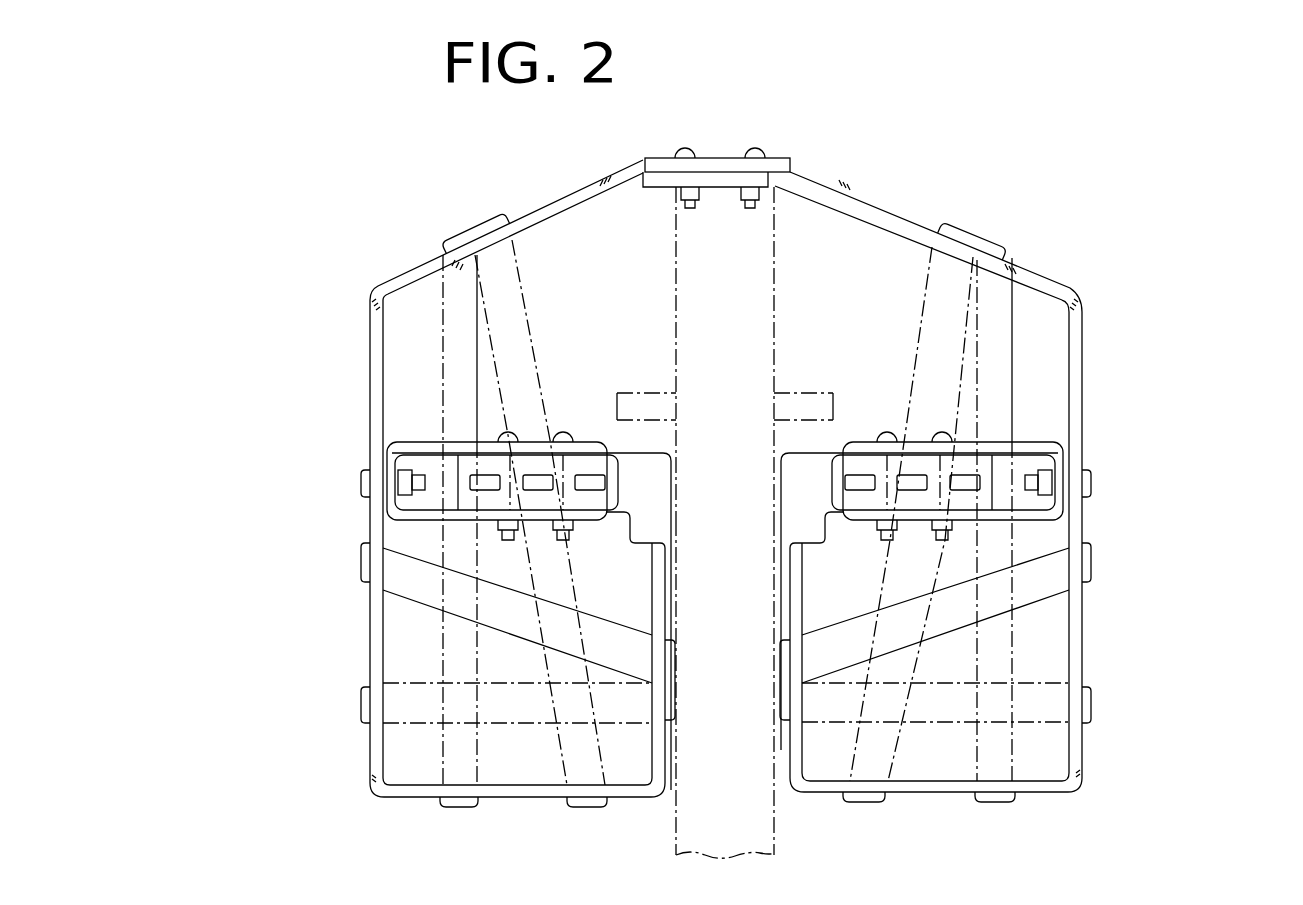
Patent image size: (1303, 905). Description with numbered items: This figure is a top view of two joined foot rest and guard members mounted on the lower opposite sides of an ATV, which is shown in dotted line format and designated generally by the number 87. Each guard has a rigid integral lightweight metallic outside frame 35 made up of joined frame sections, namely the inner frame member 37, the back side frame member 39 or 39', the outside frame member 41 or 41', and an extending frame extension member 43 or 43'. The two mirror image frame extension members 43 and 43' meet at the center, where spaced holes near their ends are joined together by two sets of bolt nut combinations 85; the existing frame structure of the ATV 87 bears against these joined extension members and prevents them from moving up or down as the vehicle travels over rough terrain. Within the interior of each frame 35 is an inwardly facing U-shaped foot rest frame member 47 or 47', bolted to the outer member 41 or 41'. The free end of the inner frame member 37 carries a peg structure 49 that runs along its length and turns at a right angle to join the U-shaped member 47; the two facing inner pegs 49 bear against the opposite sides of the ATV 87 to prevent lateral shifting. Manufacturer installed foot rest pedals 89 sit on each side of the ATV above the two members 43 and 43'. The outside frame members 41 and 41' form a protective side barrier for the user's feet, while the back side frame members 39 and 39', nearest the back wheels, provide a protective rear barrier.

The outside metallic frame 35 is at (340, 526).
The inner frame member 37 is at (790, 740).
The back side frame member 39 is at (518, 555).
The back side frame member 39' is at (935, 556).
The outside frame member 41 is at (468, 615).
The outside frame member 41' is at (1002, 615).
The frame extension member 43 is at (506, 216).
The frame extension member 43' is at (928, 222).
The U-shaped foot rest frame member 47 is at (502, 451).
The U-shaped foot rest frame member 47' is at (947, 451).
The peg structure 49 is at (770, 503).
The bolt nut combinations 85 is at (755, 156).
The ATV 87 is at (744, 351).
The foot rest pedals 89 is at (650, 392).